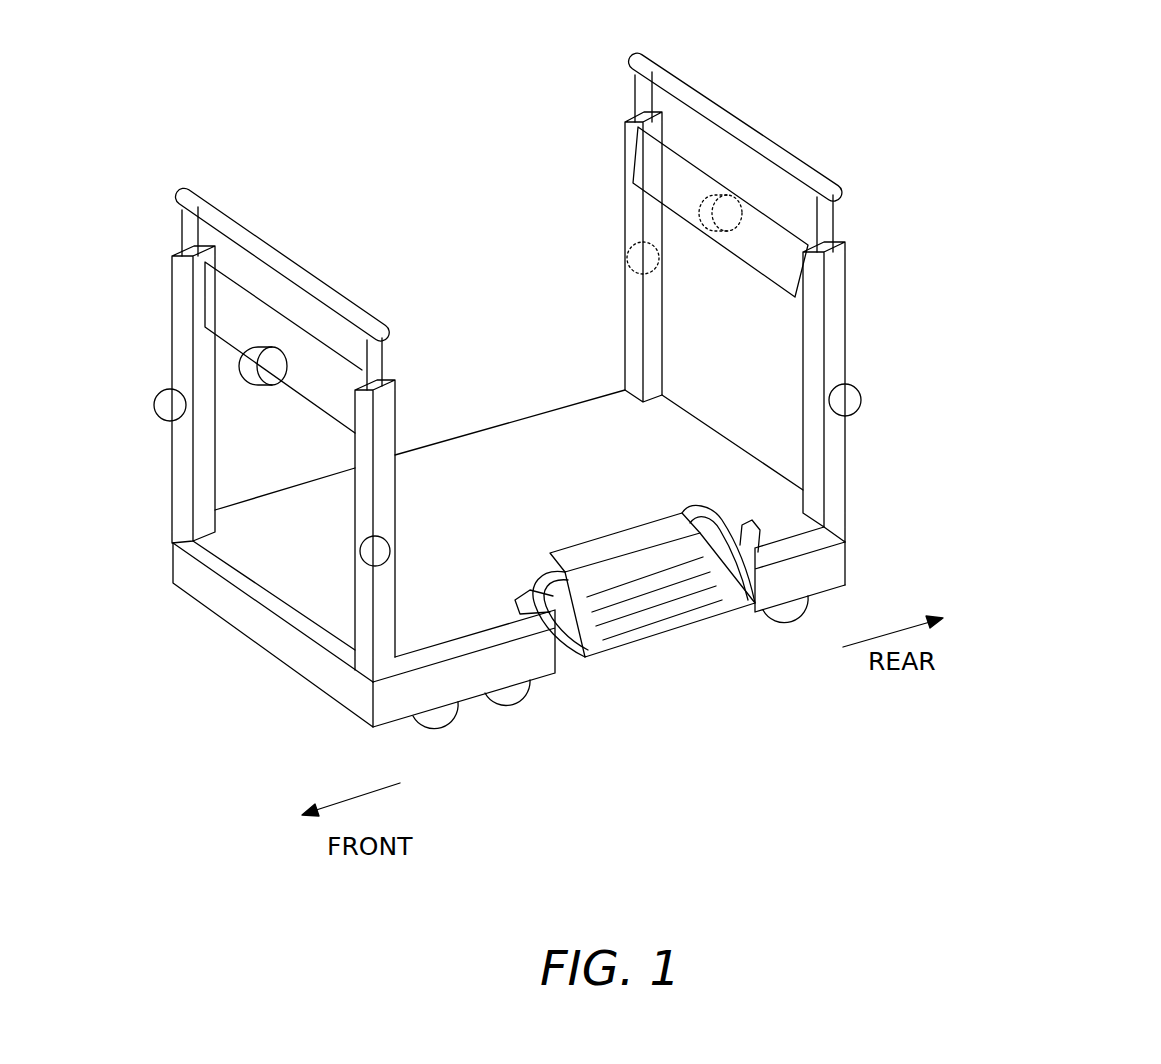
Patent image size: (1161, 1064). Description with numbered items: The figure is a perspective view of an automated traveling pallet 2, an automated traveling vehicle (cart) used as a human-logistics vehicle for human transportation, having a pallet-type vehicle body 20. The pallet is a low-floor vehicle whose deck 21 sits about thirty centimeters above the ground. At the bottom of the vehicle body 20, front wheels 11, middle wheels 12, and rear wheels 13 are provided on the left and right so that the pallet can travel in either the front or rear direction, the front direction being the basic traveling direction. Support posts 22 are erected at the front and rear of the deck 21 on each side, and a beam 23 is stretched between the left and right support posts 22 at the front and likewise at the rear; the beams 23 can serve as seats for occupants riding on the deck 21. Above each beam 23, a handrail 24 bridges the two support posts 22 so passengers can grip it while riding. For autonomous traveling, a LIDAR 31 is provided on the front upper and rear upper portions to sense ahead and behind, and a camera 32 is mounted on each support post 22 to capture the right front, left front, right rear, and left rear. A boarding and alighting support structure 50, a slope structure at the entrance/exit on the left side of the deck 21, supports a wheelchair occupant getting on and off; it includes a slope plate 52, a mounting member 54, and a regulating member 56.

The automated traveling pallet 2 is at (326, 73).
The front wheels 11 is at (432, 726).
The middle wheels 12 is at (507, 702).
The rear wheels 13 is at (805, 617).
The vehicle body 20 is at (161, 572).
The deck 21 is at (573, 427).
The support posts 22 is at (180, 490).
The beam 23 is at (210, 292).
The handrail 24 is at (178, 183).
The LIDAR 31 is at (252, 372).
The camera 32 is at (153, 403).
The boarding and alighting support structure 50 is at (665, 749).
The slope plate 52 is at (693, 598).
The mounting member 54 is at (620, 552).
The regulating member 56 is at (533, 600).